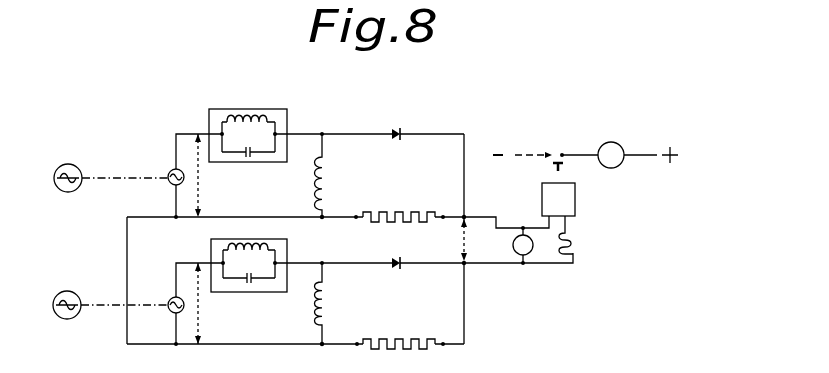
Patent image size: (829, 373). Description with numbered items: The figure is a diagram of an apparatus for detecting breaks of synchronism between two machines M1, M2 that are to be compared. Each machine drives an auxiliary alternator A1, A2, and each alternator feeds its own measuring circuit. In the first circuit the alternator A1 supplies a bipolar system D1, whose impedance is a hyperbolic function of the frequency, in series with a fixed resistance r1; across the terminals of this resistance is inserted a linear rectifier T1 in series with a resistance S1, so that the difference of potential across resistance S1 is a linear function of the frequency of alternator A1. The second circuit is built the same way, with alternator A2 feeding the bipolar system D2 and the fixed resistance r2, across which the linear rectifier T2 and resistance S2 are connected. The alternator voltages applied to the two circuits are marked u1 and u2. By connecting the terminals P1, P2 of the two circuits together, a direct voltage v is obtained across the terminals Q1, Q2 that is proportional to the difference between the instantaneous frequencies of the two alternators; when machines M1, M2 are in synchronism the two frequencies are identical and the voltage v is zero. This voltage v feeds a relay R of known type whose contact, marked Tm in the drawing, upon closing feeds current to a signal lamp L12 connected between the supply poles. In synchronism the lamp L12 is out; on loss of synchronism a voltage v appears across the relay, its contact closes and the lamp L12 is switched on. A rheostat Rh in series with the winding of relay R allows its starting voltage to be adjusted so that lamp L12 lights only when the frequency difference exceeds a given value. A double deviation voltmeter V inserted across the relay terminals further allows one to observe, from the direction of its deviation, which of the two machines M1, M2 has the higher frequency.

The machine to be compared M1 is at (111, 168).
The machine to be compared M2 is at (110, 292).
The auxiliary alternator A1 is at (165, 171).
The auxiliary alternator A2 is at (165, 298).
The bipolar system D1 is at (248, 127).
The bipolar system D2 is at (249, 256).
The voltage u1 is at (206, 175).
The voltage u2 is at (206, 303).
The fixed resistance r1 is at (328, 174).
The fixed resistance r2 is at (328, 302).
The linear rectifier T1 is at (399, 125).
The linear rectifier T2 is at (401, 254).
The resistance S1 is at (399, 207).
The resistance S2 is at (400, 333).
The terminal P1 is at (323, 228).
The terminal P2 is at (323, 354).
The terminal Q1 is at (474, 207).
The terminal Q2 is at (474, 273).
The direct voltage v is at (457, 240).
The double deviation voltmeter V is at (515, 245).
The relay R is at (558, 199).
The rheostat Rh is at (578, 235).
The tap Tm is at (564, 171).
The signal lamp L12 is at (585, 148).